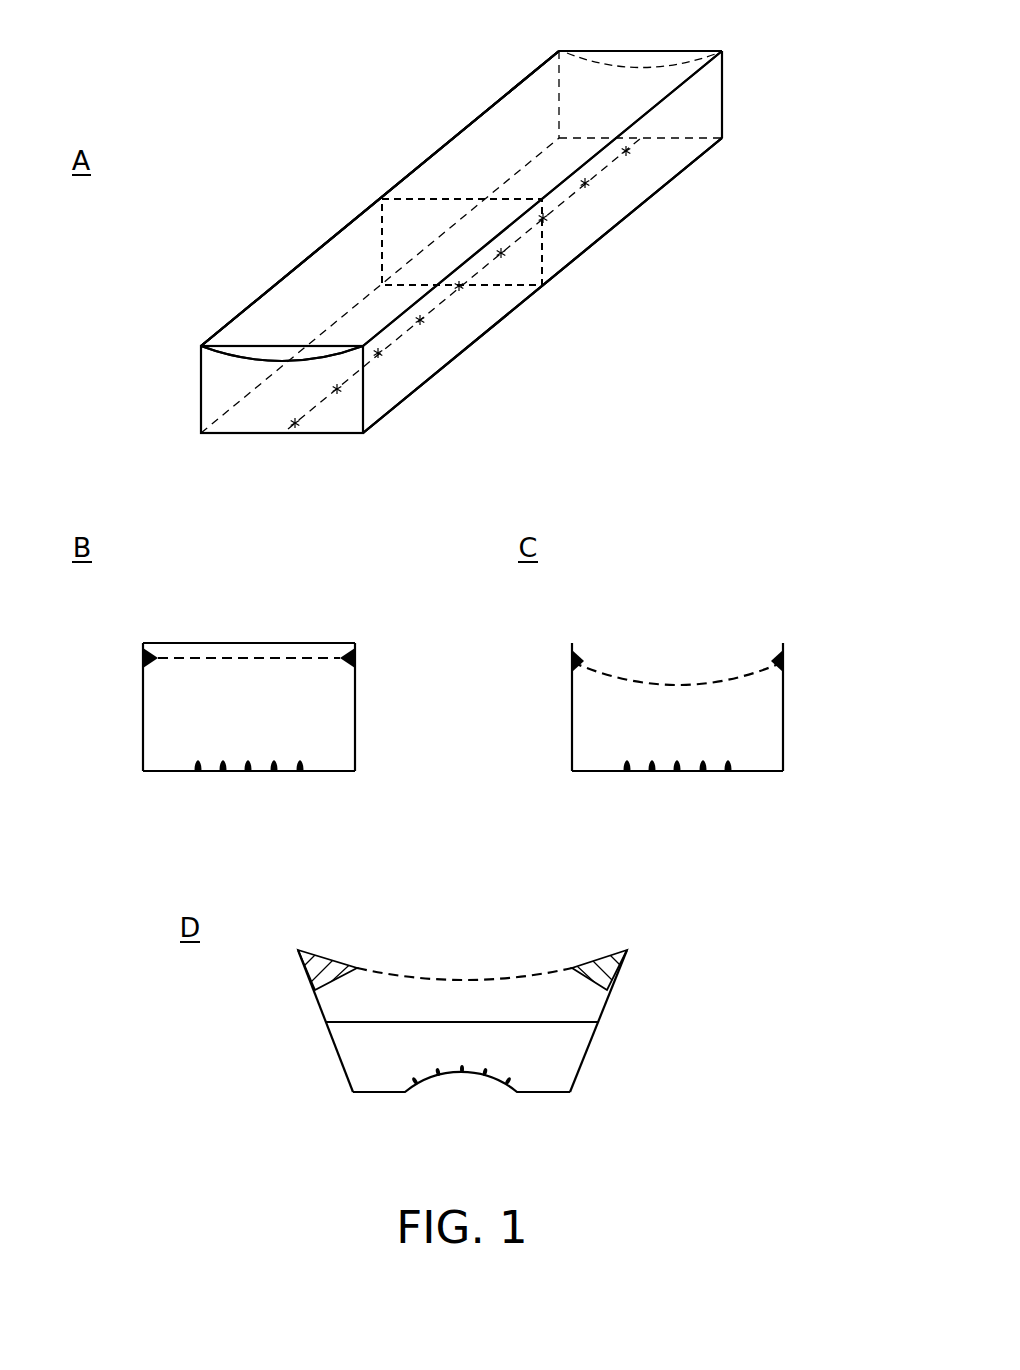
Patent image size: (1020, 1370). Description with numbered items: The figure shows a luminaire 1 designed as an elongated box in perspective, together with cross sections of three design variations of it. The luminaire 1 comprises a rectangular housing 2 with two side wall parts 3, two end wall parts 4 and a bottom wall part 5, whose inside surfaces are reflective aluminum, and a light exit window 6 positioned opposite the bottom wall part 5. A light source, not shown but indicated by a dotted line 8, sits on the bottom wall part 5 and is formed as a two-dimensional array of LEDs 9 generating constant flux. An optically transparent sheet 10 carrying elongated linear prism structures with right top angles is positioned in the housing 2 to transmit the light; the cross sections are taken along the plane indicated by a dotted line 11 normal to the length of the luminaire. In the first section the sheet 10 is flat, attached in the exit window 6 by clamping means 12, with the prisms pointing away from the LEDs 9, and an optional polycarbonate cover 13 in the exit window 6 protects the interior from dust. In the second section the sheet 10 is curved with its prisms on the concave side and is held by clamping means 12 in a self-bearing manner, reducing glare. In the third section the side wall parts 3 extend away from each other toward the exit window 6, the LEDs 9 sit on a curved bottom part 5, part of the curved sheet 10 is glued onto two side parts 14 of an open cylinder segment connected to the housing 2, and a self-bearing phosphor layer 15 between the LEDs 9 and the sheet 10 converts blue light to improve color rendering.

The luminaire 1 is at (290, 146).
The rectangular housing 2 is at (442, 145).
The side wall parts 3 is at (323, 280).
The end wall parts 4 is at (613, 82).
The bottom wall part 5 is at (643, 165).
The light exit window 6 is at (525, 125).
The dotted line 8 is at (420, 322).
The LEDs 9 is at (198, 771).
The optically transparent sheet 10 is at (258, 362).
The dotted line 11 is at (542, 245).
The clamping means 12 is at (142, 658).
The cover 13 is at (248, 640).
The side parts 14 is at (317, 970).
The self-bearing layer of phosphor material 15 is at (545, 1023).